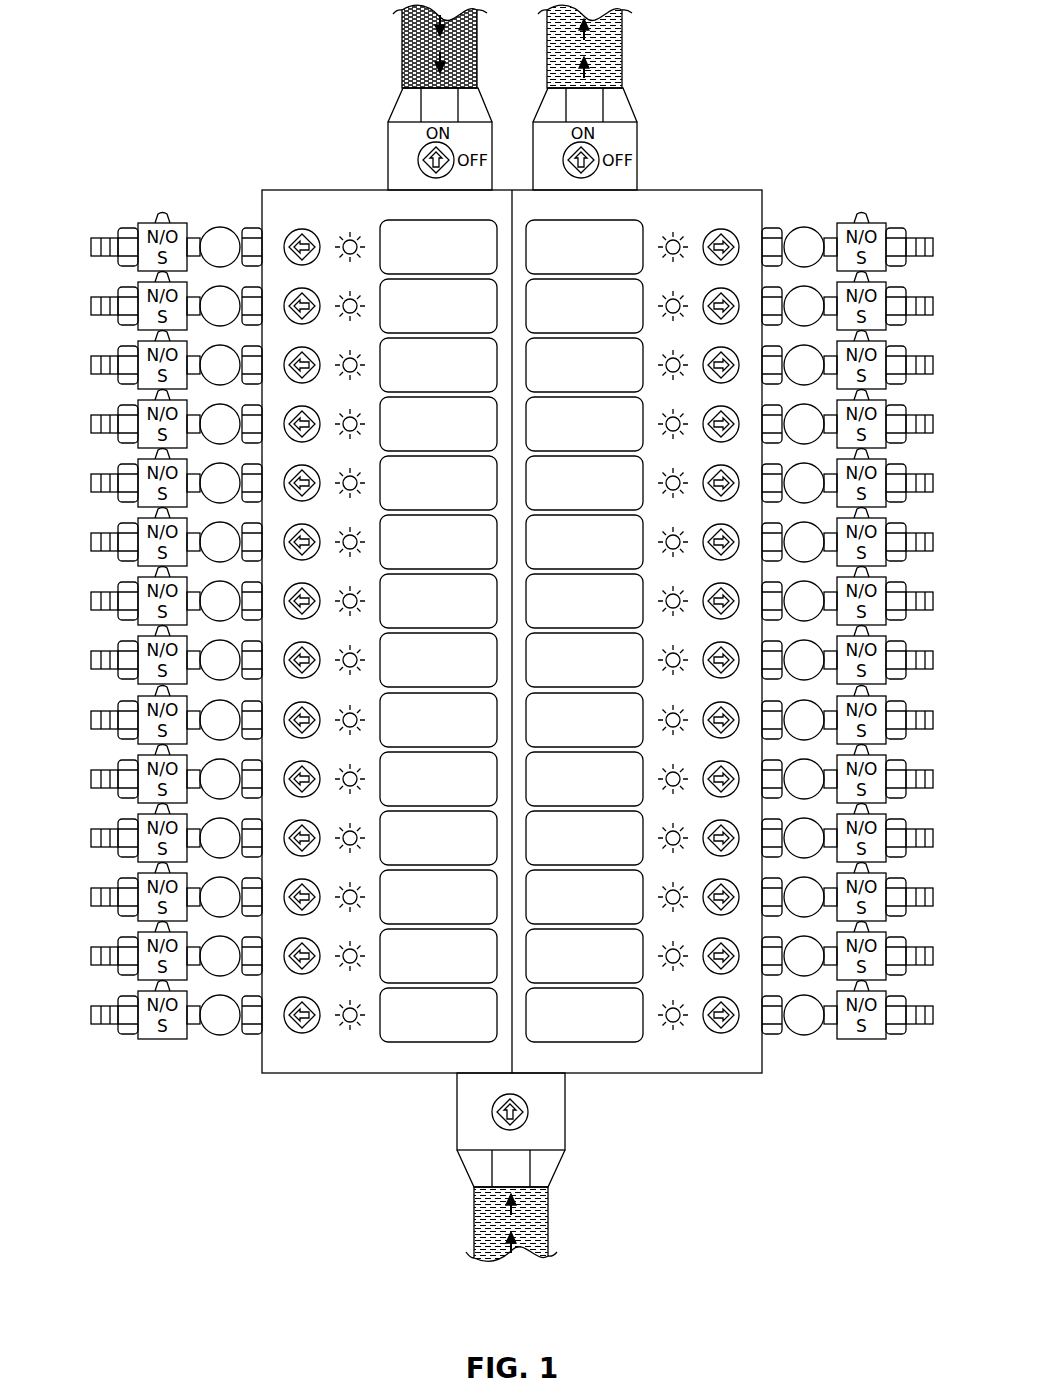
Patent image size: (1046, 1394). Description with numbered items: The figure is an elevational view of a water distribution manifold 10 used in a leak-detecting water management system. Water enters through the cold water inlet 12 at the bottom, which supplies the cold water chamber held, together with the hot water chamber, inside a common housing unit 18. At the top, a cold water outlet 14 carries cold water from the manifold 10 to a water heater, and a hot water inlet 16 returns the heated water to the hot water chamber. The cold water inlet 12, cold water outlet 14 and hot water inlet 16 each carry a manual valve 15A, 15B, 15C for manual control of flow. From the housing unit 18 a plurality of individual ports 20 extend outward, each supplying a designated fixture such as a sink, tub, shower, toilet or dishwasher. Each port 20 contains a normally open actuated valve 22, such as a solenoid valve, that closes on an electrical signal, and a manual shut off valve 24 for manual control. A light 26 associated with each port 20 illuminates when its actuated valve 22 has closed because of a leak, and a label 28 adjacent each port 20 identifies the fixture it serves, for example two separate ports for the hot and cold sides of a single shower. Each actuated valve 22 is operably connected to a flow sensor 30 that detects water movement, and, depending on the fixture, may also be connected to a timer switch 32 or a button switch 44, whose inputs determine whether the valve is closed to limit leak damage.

The water distribution manifold 10 is at (172, 46).
The cold water inlet 12 is at (548, 1230).
The cold water outlet 14 is at (622, 48).
The hot water inlet 16 is at (402, 46).
The manual valve 15A is at (524, 1124).
The manual valve 15B is at (600, 158).
The manual valve 15C is at (422, 158).
The housing unit 18 is at (730, 190).
The port 20 is at (105, 237).
The actuated valve 22 is at (152, 222).
The manual shut off valve 24 is at (300, 229).
The light 26 is at (348, 235).
The label 28 is at (395, 1046).
The flow sensor 30 is at (803, 226).
The timer switch 32 is at (797, 1036).
The button switch 44 is at (220, 1036).